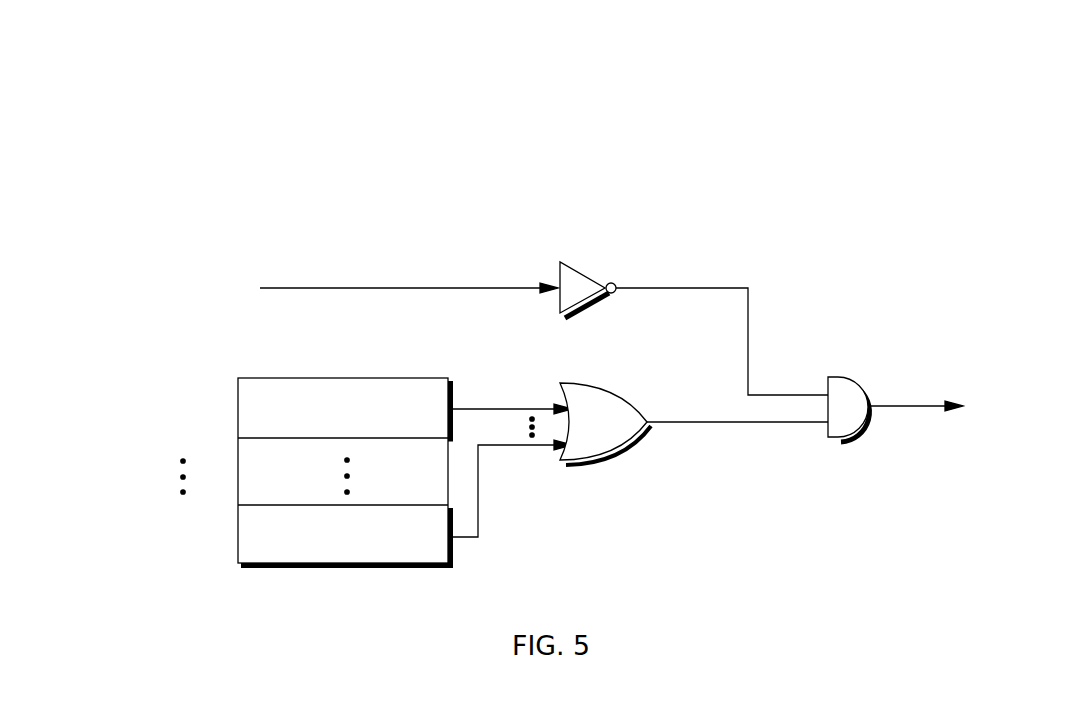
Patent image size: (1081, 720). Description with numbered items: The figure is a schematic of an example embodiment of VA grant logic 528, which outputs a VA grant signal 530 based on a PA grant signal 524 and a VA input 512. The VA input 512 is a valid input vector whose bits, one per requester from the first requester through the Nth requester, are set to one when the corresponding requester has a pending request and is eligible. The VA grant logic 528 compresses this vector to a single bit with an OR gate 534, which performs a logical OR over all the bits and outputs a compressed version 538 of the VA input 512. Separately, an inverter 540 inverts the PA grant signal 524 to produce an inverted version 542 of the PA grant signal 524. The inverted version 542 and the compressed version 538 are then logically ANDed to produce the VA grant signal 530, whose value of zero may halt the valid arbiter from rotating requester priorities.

The VA grant logic 528 is at (916, 102).
The PA grant signal 524 is at (400, 288).
The inverter 540 is at (603, 281).
The inverted version of the PA grant signal 542 is at (710, 288).
The VA input 512 is at (362, 370).
The OR gate 534 is at (632, 402).
The compressed version of the VA input 538 is at (734, 423).
The VA grant signal 530 is at (910, 405).